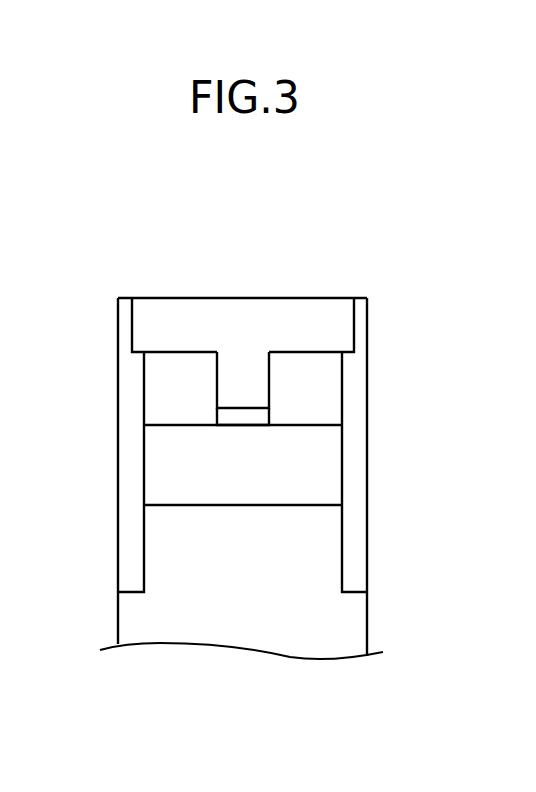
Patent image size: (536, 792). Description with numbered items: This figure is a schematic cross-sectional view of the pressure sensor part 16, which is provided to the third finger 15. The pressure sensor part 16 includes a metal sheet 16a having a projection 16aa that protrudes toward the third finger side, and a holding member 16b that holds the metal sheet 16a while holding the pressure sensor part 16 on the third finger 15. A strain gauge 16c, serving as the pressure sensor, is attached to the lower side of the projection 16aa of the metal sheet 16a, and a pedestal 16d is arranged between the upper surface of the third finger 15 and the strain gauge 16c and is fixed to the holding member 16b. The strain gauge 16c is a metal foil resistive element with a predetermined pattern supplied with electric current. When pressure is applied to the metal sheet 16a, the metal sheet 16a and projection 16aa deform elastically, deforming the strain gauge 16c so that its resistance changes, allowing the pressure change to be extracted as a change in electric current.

The third finger 15 is at (358, 619).
The pressure sensor part 16 is at (352, 246).
The metal sheet 16a is at (267, 311).
The projection 16aa is at (235, 377).
The holding member 16b is at (132, 440).
The strain gauge 16c is at (242, 415).
The pedestal 16d is at (323, 455).